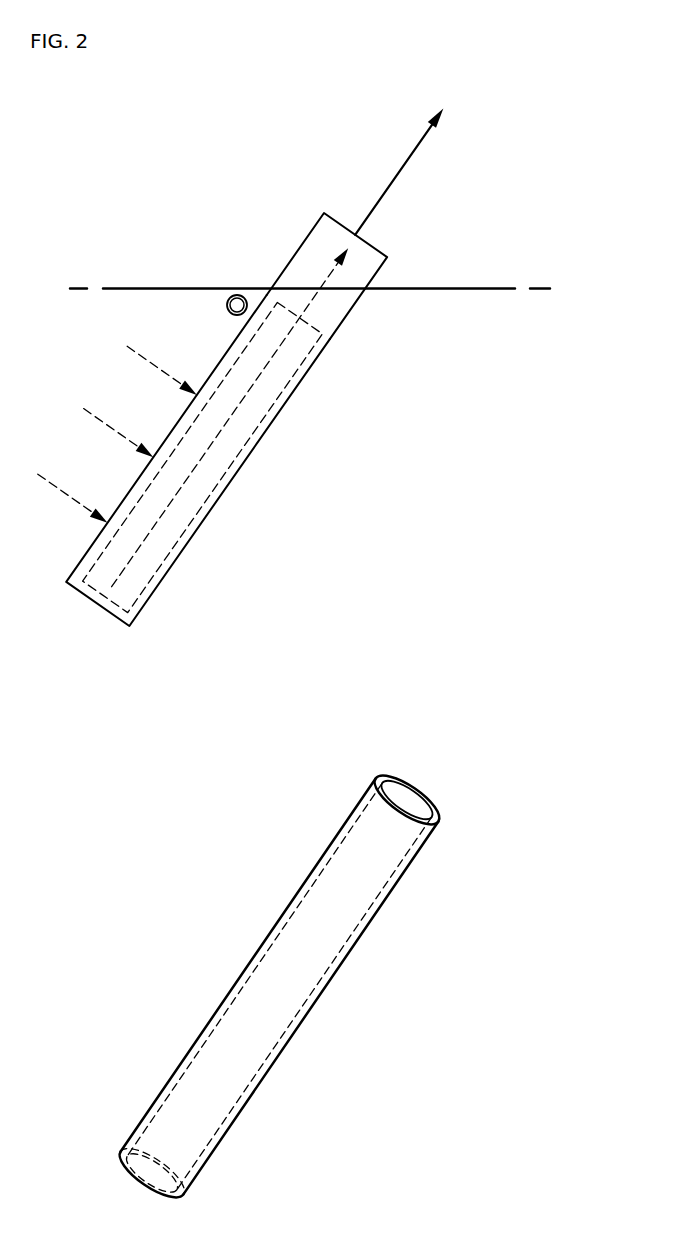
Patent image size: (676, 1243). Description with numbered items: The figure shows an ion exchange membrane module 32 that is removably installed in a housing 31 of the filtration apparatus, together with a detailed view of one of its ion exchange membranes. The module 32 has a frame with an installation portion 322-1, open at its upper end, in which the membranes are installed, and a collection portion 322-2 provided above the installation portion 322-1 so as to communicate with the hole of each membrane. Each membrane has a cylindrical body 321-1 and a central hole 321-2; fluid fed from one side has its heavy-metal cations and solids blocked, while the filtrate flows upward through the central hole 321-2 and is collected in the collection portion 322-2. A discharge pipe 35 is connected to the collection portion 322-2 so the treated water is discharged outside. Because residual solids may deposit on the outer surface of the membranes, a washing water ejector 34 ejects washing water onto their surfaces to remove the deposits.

The housing 31 is at (480, 289).
The ion exchange membrane module 32 is at (324, 407).
The washing water ejector 34 is at (232, 296).
The discharge pipe 35 is at (399, 172).
The cylindrical body 321-1 is at (280, 986).
The central hole 321-2 is at (295, 897).
The installation portion 322-1 is at (198, 460).
The collection portion 322-2 is at (327, 276).